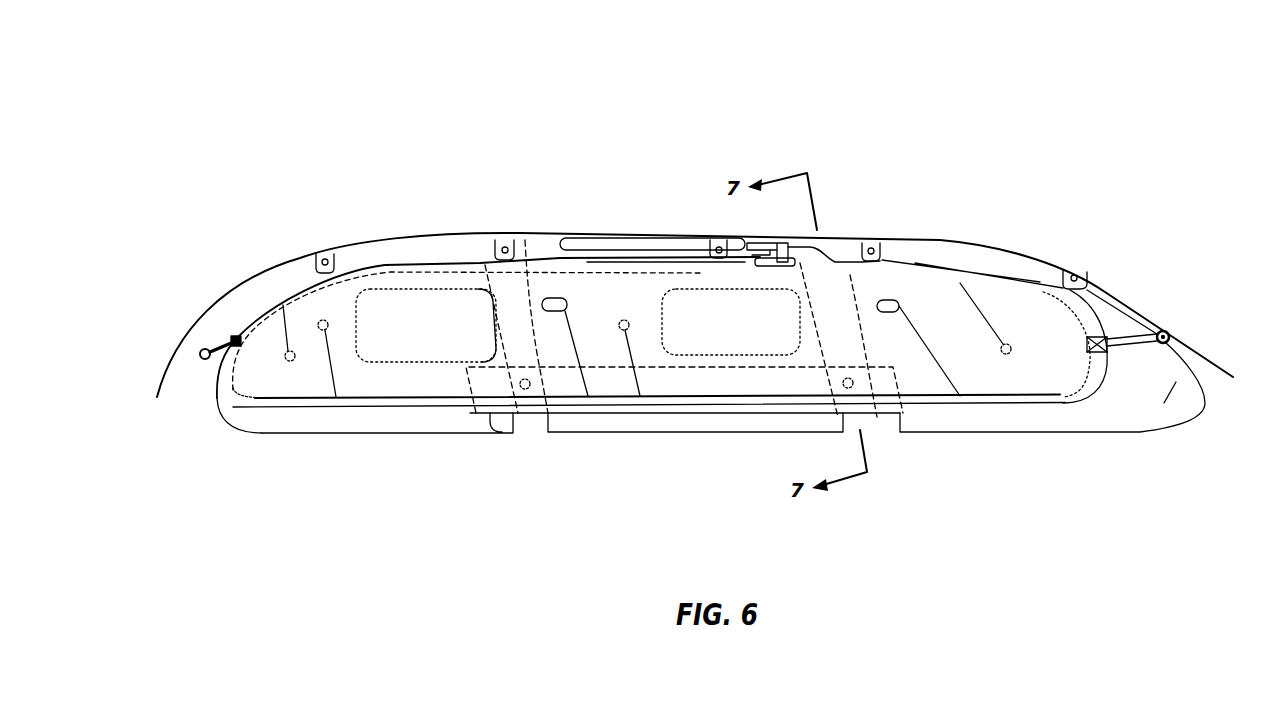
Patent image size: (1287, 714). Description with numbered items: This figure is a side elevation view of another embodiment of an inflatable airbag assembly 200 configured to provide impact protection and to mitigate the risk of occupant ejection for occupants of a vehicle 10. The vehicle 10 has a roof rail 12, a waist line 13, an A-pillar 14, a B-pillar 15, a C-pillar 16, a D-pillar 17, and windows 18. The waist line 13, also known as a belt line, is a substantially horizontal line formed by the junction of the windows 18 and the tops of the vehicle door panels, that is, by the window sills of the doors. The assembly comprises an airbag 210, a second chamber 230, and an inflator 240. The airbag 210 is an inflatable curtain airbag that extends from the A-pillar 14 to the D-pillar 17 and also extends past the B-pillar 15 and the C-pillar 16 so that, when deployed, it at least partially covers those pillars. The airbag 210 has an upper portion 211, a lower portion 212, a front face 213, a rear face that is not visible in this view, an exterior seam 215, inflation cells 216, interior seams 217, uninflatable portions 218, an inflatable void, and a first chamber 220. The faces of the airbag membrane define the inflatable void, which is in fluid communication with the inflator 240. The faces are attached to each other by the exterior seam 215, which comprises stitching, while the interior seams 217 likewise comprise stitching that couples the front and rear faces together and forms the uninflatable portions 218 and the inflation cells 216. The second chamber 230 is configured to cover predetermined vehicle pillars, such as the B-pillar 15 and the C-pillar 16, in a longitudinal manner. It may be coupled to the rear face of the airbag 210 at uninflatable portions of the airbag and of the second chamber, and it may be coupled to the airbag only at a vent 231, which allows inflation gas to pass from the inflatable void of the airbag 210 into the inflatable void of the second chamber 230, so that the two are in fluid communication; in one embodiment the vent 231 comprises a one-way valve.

The vehicle 10 is at (1115, 232).
The roof rail 12 is at (1007, 263).
The waist line 13 is at (280, 437).
The A-pillar 14 is at (1140, 312).
The B-pillar 15 is at (836, 304).
The C-pillar 16 is at (525, 240).
The D-pillar 17 is at (220, 333).
The windows 18 is at (360, 422).
The inflatable airbag assembly 200 is at (256, 95).
The airbag 210 is at (436, 200).
The upper portion 211 is at (349, 290).
The lower portion 212 is at (307, 374).
The front face 213 is at (617, 301).
The exterior seam 215 is at (1088, 393).
The inflation cells 216 is at (593, 310).
The interior seams 217 is at (755, 292).
The uninflatable portions 218 is at (410, 331).
The first chamber 220 is at (426, 384).
The second chamber 230 is at (483, 420).
The vent 231 is at (518, 413).
The inflator 240 is at (656, 242).